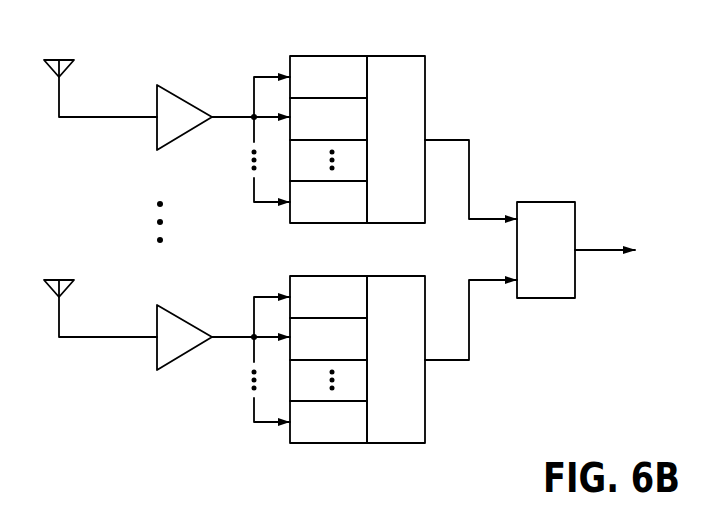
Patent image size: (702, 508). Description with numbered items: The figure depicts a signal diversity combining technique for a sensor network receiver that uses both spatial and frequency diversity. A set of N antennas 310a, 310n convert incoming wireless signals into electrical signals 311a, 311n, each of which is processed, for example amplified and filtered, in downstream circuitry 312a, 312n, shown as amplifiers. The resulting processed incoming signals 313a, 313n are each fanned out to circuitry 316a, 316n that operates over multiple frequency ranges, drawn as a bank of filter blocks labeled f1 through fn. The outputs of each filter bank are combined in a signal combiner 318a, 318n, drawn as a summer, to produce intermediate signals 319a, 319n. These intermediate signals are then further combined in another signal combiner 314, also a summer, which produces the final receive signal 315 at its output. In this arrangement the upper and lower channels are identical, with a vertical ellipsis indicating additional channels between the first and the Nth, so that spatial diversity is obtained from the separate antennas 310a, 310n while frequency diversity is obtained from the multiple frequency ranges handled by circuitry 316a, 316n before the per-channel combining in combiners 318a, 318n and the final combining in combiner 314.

The antenna 310a is at (53, 58).
The electrical signal 311a is at (101, 117).
The downstream circuitry 312a is at (168, 90).
The processed incoming signal 313a is at (225, 117).
The circuitry operating over multiple frequency ranges 316a is at (330, 55).
The signal combiner 318a is at (402, 55).
The intermediate signal 319a is at (448, 139).
The antenna 310n is at (53, 278).
The electrical signal 311n is at (101, 337).
The downstream circuitry 312n is at (168, 310).
The processed incoming signal 313n is at (225, 337).
The circuitry operating over multiple frequency ranges 316n is at (329, 276).
The signal combiner 318n is at (402, 276).
The intermediate signal 319n is at (469, 335).
The signal combiner 314 is at (542, 200).
The final receive signal 315 is at (604, 247).